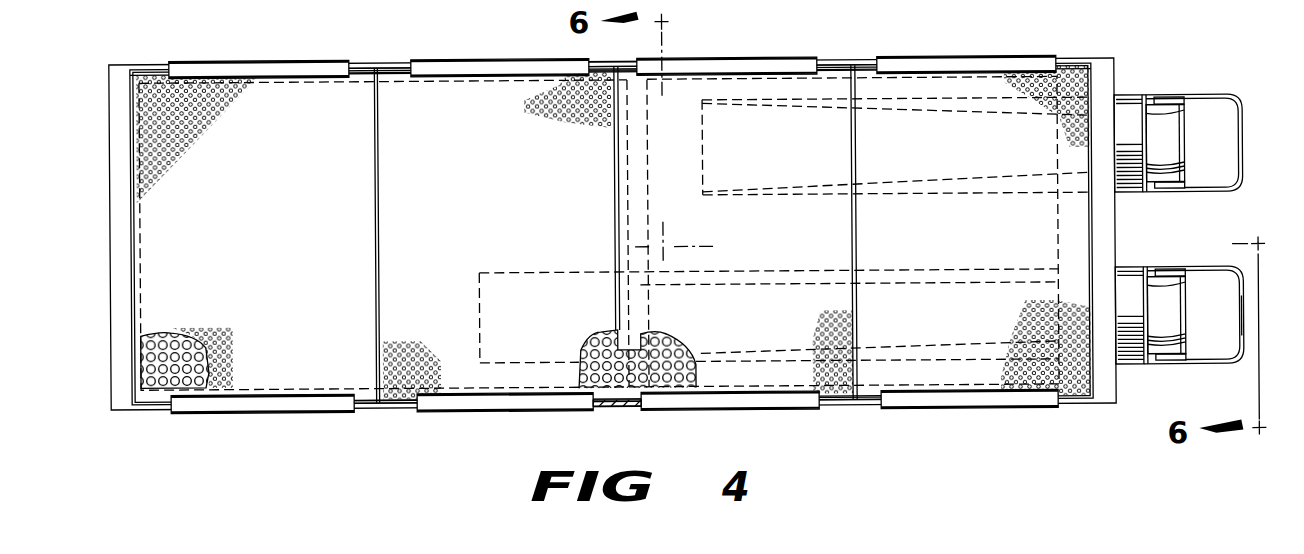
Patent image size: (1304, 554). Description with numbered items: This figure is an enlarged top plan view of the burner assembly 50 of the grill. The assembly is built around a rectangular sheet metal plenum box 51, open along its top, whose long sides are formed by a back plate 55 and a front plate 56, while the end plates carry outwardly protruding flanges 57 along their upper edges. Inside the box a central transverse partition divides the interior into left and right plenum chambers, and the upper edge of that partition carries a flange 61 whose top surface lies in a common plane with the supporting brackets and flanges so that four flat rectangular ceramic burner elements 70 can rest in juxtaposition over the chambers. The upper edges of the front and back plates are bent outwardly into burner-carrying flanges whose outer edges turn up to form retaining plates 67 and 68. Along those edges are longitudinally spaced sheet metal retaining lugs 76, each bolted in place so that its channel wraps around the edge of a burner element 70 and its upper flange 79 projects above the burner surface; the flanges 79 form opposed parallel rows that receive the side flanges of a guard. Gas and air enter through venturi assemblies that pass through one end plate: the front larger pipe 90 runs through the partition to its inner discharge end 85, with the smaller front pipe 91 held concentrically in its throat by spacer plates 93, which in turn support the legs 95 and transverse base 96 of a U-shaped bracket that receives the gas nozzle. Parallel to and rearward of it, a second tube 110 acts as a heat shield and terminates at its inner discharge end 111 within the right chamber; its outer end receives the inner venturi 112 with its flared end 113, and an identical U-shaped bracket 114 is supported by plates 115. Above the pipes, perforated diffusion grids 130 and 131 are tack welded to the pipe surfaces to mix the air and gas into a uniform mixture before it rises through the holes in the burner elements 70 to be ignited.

The burner assembly 50 is at (106, 134).
The plenum box 51 is at (396, 58).
The back plate 55 is at (970, 86).
The front plate 56 is at (452, 384).
The outwardly protruding flanges 57 is at (117, 202).
The flange 61 is at (627, 165).
The retaining plate 67 is at (604, 65).
The retaining plate 68 is at (611, 407).
The burner elements 70 is at (150, 275).
The retaining lugs 76 is at (272, 57).
The upper upwardly protruding flange 79 is at (186, 74).
The inner discharge end 85 is at (477, 314).
The front larger pipe 90 is at (512, 271).
The smaller front pipe 91 is at (1170, 322).
The spacer plates 93 is at (1163, 277).
The legs 95 is at (1216, 268).
The transverse base 96 is at (1238, 312).
The second tube 110 is at (796, 195).
The inner discharge end 111 is at (702, 186).
The inner venturi 112 is at (1170, 140).
The flared end 113 is at (1178, 153).
The U-shaped bracket 114 is at (1243, 122).
The plates 115 is at (1164, 106).
The diffusion grid 130 is at (670, 340).
The diffusion grid 131 is at (157, 378).